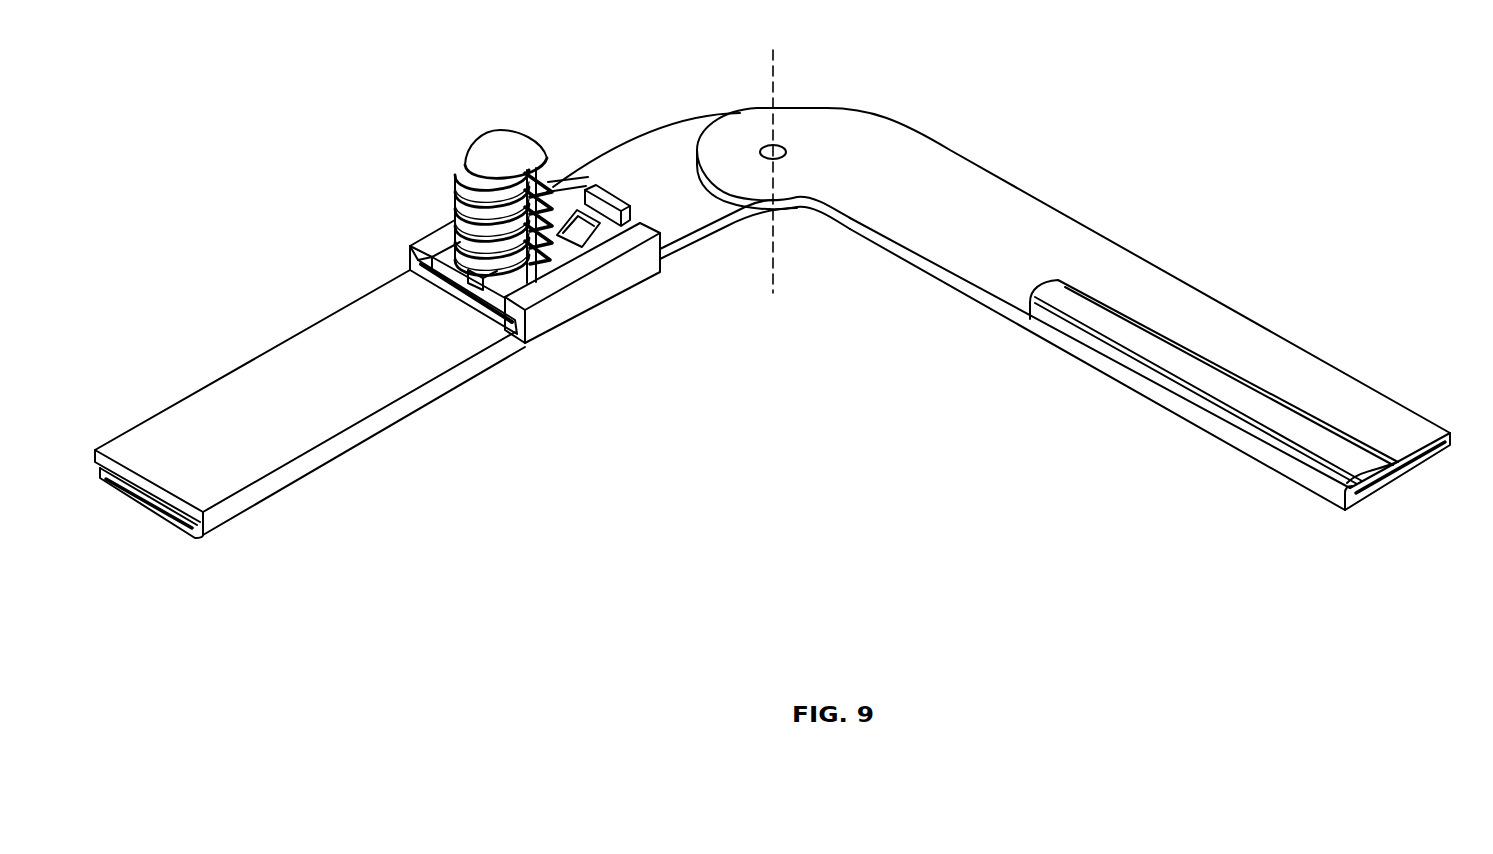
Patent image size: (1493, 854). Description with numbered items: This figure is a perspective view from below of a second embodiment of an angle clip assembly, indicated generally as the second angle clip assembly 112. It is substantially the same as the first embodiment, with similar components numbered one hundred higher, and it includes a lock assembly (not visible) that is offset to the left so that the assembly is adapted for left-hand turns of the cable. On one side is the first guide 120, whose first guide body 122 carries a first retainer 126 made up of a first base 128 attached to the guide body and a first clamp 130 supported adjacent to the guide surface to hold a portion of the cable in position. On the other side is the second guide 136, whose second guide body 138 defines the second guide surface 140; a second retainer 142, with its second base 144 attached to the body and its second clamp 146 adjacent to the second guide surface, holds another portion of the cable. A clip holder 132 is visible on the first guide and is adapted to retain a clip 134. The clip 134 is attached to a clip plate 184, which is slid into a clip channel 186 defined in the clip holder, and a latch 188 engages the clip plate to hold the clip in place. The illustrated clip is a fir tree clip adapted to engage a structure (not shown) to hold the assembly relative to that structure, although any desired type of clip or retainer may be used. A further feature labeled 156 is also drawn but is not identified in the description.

The second angle clip assembly 112 is at (1021, 108).
The first guide 120 is at (653, 148).
The first guide body 122 is at (147, 440).
The first retainer 126 is at (177, 528).
The first base 128 is at (297, 483).
The first clamp 130 is at (117, 488).
The clip holder 132 is at (573, 320).
The clip 134 is at (490, 163).
The second guide 136 is at (882, 250).
The second guide body 138 is at (918, 128).
The second guide surface 140 is at (995, 200).
The second retainer 142 is at (1185, 397).
The second base 144 is at (1073, 350).
The second clamp 146 is at (1405, 425).
The pivot axis 156 is at (774, 242).
The clip plate 184 is at (490, 318).
The clip channel 186 is at (408, 243).
The latch 188 is at (590, 220).